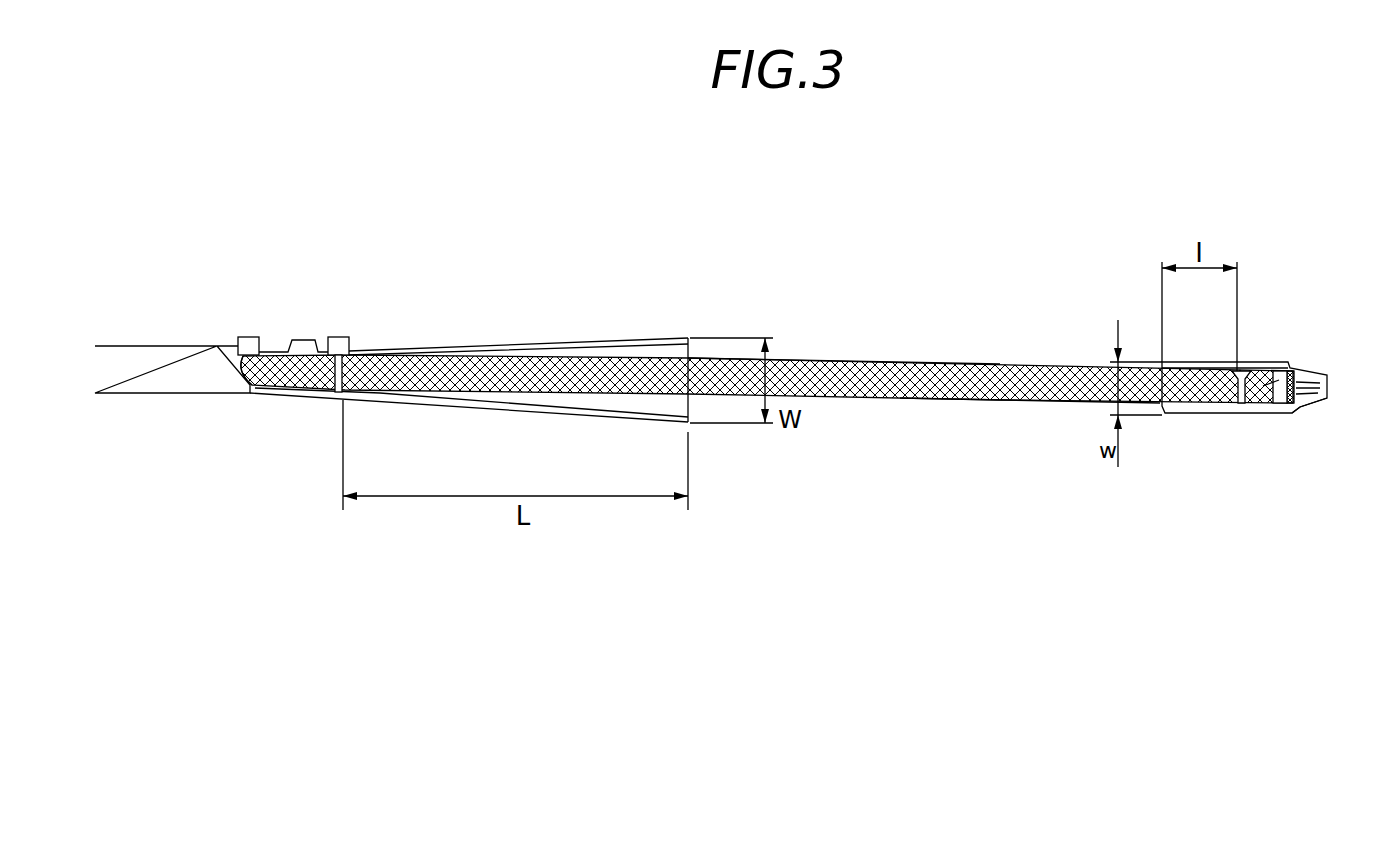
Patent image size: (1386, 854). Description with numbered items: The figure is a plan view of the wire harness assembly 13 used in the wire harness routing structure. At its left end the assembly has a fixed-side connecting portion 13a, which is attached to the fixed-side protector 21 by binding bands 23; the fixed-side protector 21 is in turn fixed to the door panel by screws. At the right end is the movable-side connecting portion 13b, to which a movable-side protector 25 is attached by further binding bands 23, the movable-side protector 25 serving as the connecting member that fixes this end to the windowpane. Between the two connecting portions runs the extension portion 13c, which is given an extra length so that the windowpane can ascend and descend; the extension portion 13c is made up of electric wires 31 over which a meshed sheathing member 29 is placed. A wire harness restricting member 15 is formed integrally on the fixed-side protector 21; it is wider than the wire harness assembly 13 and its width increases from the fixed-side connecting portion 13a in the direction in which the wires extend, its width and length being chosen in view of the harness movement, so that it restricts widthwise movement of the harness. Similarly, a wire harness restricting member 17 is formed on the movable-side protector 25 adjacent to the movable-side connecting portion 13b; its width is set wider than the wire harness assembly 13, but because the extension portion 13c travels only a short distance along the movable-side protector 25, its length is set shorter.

The wire harness assembly 13 is at (878, 483).
The fixed-side connecting portion 13a is at (297, 386).
The movable-side connecting portion 13b is at (1297, 371).
The extension portion 13c is at (828, 358).
The wire harness restricting member 15 is at (653, 337).
The wire harness restricting member 17 is at (1180, 414).
The fixed-side protector 21 is at (188, 372).
The binding bands 23 is at (255, 337).
The movable-side protector 25 is at (1262, 362).
The meshed sheathing member 29 is at (960, 363).
The electric wires 31 is at (1312, 405).